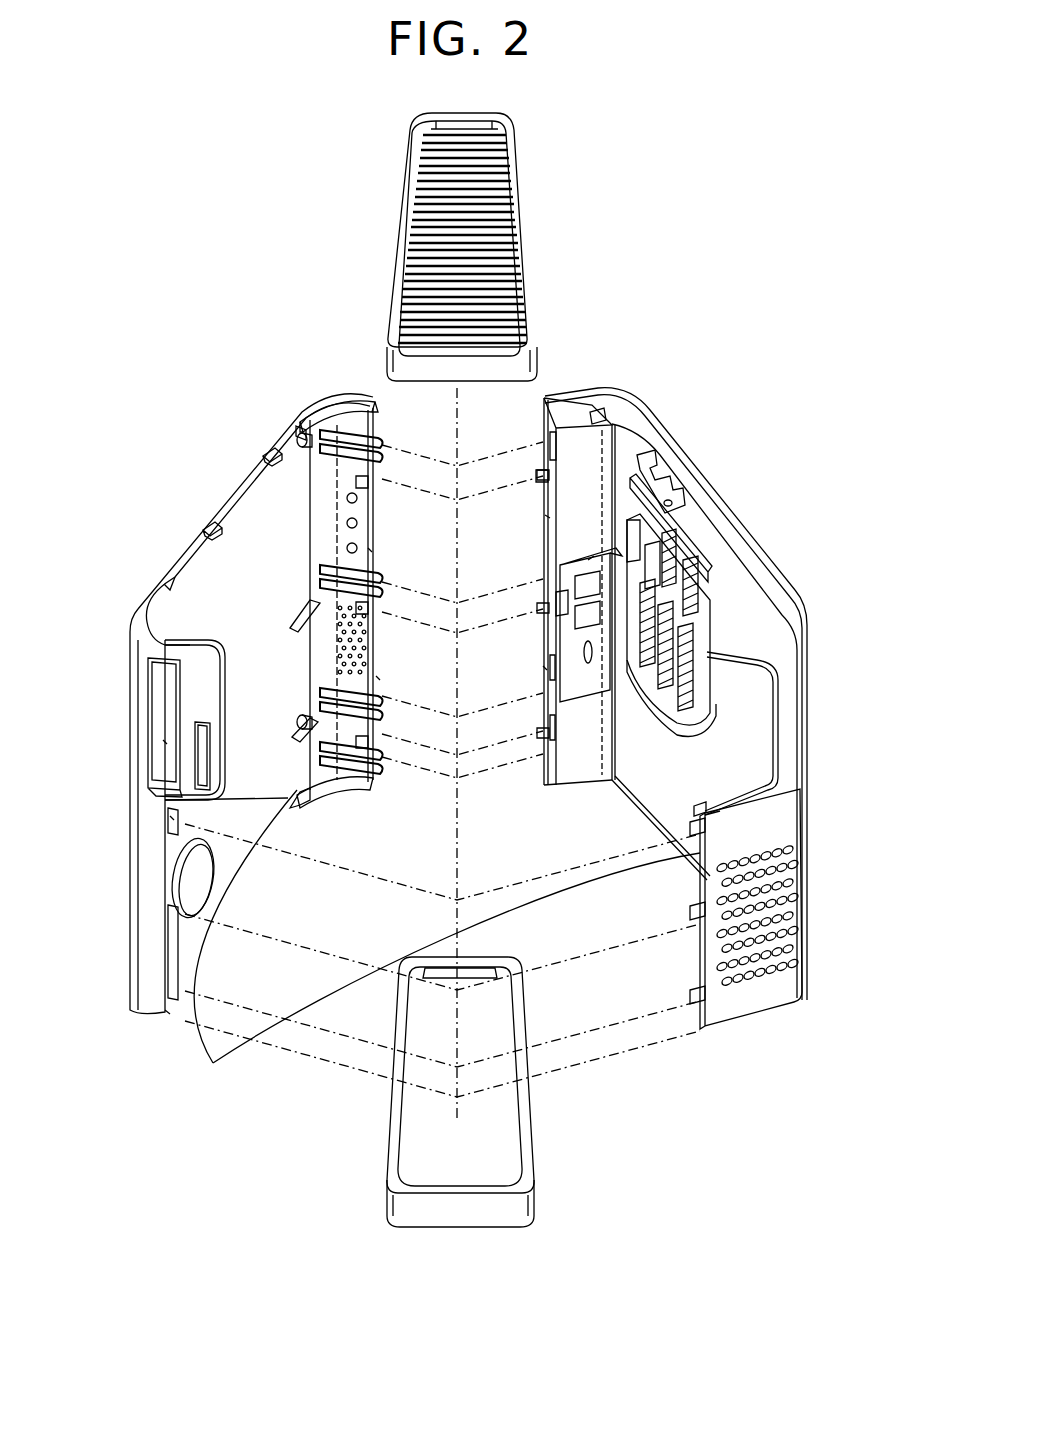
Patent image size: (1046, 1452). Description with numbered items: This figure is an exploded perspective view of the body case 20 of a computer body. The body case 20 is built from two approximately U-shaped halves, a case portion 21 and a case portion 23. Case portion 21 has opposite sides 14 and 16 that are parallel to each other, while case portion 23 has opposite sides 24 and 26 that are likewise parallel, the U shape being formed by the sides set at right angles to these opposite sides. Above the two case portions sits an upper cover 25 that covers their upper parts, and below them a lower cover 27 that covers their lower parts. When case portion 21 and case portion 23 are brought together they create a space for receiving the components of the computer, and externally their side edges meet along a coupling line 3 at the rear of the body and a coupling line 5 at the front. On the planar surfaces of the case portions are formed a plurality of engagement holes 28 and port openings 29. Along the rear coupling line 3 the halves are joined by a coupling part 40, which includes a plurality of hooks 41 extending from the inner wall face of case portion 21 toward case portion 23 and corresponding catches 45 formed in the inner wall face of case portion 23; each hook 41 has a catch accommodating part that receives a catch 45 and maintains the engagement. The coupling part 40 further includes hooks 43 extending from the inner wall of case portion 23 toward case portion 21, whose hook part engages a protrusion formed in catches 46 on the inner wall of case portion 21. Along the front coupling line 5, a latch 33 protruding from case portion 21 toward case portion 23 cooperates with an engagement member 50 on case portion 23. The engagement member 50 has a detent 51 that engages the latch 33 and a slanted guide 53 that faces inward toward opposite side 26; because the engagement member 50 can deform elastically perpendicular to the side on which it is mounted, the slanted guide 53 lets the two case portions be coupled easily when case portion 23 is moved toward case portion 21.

The coupling line 3 is at (547, 670).
The coupling line 5 is at (447, 943).
The opposite side 14 is at (168, 1012).
The opposite side 16 is at (368, 550).
The body case 20 is at (450, 846).
The case portion 21 is at (140, 1012).
The case portion 23 is at (753, 1006).
The opposite side 24 is at (782, 993).
The upper cover 25 is at (530, 278).
The opposite side 26 is at (545, 517).
The lower cover 27 is at (527, 1152).
The engagement holes 28 is at (165, 742).
The port openings 29 is at (582, 567).
The latch 33 is at (172, 818).
The coupling part 40 is at (414, 367).
The hooks 41 is at (353, 405).
The hooks 43 is at (540, 478).
The catches 45 is at (598, 418).
The catches 46 is at (300, 418).
The engagement member 50 is at (816, 766).
The detent 51 is at (693, 820).
The slanted guide 53 is at (706, 812).